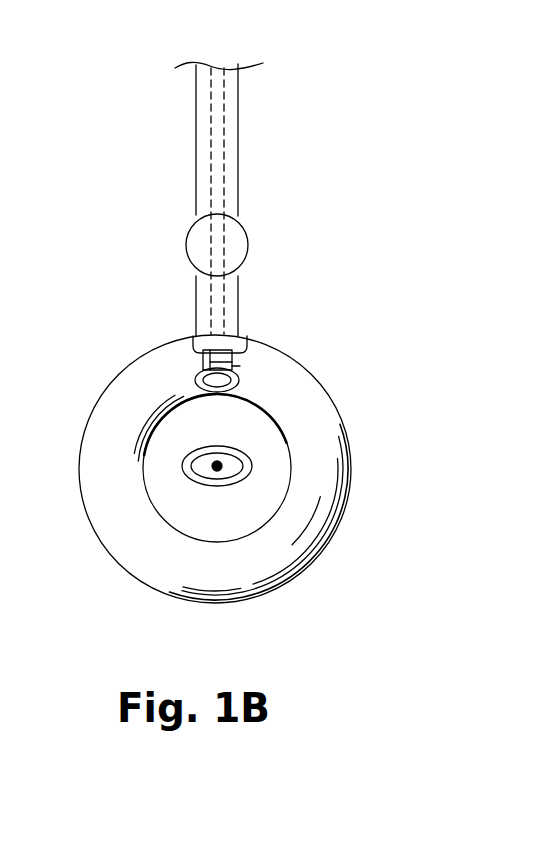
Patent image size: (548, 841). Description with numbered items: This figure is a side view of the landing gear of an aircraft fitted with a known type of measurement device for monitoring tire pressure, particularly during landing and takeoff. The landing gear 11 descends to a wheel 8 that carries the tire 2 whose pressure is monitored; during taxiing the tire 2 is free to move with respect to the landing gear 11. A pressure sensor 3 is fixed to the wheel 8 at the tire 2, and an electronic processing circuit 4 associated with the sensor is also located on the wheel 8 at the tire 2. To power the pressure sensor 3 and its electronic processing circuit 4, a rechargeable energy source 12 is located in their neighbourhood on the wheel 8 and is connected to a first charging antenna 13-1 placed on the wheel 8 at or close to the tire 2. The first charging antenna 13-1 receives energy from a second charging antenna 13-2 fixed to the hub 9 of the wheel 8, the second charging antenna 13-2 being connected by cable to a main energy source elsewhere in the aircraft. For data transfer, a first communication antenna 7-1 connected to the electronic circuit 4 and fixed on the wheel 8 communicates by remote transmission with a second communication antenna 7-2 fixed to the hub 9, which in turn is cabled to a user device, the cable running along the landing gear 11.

The tire 2 is at (313, 472).
The pressure sensor 3 is at (246, 348).
The electronic processing circuit 4 is at (246, 362).
The first communication antenna 7-1 is at (240, 382).
The second communication antenna 7-2 is at (193, 470).
The wheel 8 is at (345, 412).
The hub 9 is at (211, 463).
The landing gear 11 is at (238, 125).
The rechargeable energy source 12 is at (193, 348).
The first charging antenna 13-1 is at (203, 359).
The second charging antenna 13-2 is at (215, 486).